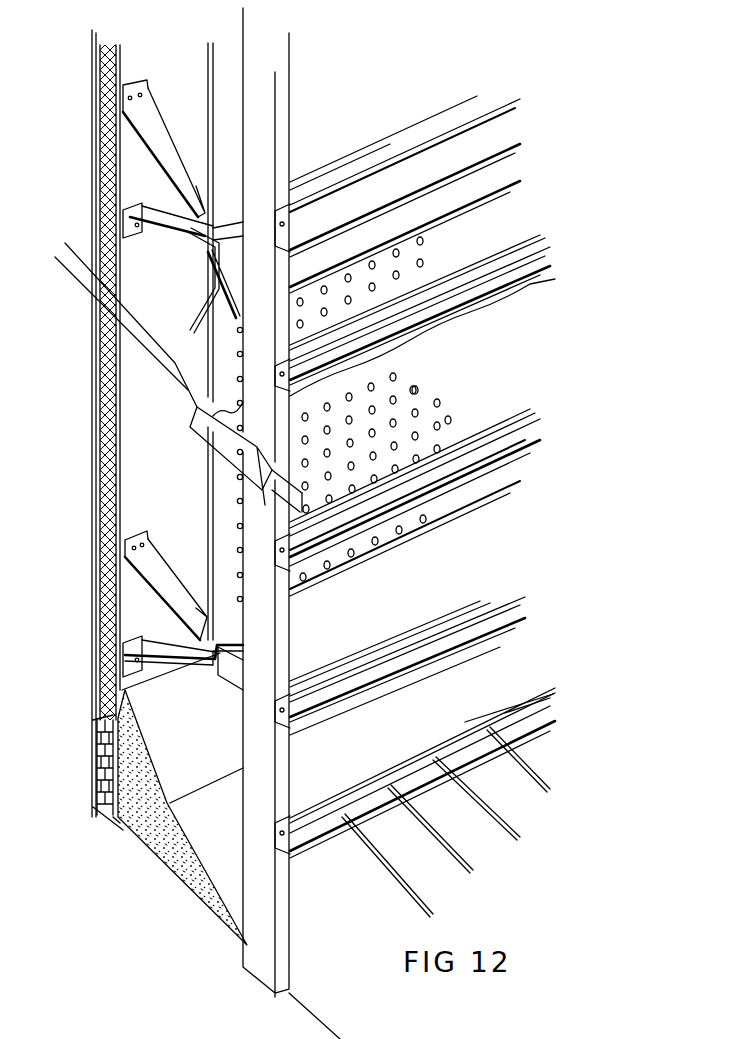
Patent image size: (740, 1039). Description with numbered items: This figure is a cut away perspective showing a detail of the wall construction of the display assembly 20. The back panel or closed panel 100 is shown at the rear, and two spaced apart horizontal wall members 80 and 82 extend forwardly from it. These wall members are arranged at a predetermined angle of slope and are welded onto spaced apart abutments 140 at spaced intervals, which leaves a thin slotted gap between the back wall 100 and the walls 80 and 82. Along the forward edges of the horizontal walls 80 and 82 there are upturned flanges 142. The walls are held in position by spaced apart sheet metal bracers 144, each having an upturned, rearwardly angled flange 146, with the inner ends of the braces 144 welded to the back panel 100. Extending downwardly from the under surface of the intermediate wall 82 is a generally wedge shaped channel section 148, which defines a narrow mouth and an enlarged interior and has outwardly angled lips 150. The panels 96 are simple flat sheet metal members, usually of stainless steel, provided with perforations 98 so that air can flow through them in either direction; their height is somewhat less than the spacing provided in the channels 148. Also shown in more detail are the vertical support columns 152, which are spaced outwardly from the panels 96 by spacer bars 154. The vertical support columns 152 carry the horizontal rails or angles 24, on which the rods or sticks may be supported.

The merchandise display assembly 20 is at (167, 887).
The horizontal rails or angles 24 is at (470, 268).
The horizontal wall member 80 is at (172, 647).
The intermediate wall 82 is at (137, 387).
The panel 96 is at (516, 358).
The perforation 98 is at (448, 418).
The back panel 100 is at (118, 470).
The abutment 140 is at (132, 203).
The upturned flange 142 is at (360, 148).
The sheet metal bracer 144 is at (150, 113).
The upturned rearwardly angled flange 146 is at (170, 233).
The wedge shaped channel section 148 is at (207, 280).
The outwardly angled lip 150 is at (110, 470).
The vertical support column 152 is at (292, 765).
The spacer bar 154 is at (240, 688).